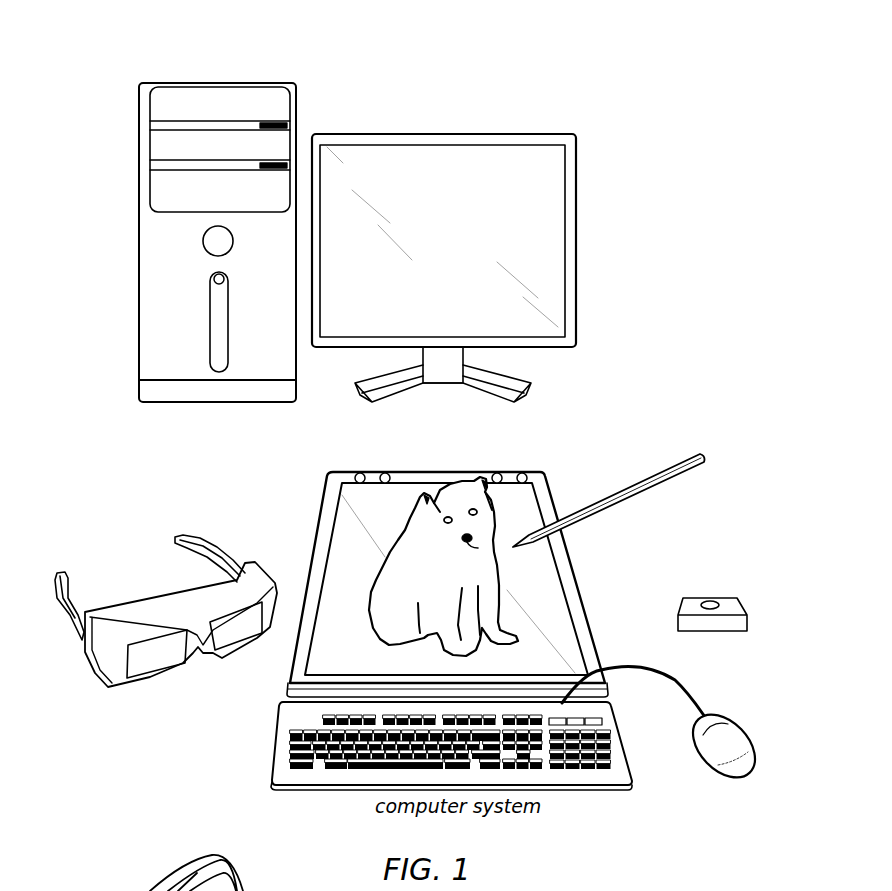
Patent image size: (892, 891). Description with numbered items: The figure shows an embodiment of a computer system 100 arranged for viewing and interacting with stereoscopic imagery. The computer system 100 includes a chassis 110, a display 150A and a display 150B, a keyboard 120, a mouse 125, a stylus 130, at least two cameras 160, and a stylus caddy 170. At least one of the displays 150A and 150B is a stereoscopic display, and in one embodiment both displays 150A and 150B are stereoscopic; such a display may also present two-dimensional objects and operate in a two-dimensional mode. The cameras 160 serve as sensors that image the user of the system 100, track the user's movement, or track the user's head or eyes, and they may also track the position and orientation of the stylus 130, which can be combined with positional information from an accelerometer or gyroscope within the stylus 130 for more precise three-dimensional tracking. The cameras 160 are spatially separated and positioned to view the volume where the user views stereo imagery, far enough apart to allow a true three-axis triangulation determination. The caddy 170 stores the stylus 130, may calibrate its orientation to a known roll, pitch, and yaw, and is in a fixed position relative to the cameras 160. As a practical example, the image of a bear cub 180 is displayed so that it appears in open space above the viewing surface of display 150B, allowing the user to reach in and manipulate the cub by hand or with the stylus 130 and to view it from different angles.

The computer system 100 is at (510, 56).
The chassis 110 is at (182, 85).
The keyboard 120 is at (583, 788).
The mouse 125 is at (733, 772).
The stylus 130 is at (703, 457).
The display 150A is at (517, 133).
The display 150B is at (580, 587).
The cameras 160 is at (517, 468).
The stylus caddy 170 is at (713, 597).
The bear cub 180 is at (398, 532).